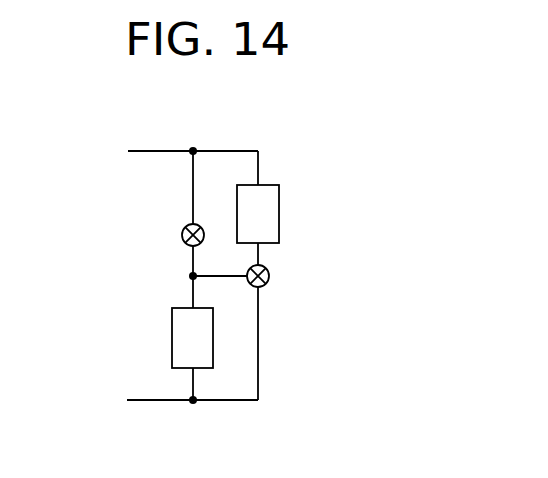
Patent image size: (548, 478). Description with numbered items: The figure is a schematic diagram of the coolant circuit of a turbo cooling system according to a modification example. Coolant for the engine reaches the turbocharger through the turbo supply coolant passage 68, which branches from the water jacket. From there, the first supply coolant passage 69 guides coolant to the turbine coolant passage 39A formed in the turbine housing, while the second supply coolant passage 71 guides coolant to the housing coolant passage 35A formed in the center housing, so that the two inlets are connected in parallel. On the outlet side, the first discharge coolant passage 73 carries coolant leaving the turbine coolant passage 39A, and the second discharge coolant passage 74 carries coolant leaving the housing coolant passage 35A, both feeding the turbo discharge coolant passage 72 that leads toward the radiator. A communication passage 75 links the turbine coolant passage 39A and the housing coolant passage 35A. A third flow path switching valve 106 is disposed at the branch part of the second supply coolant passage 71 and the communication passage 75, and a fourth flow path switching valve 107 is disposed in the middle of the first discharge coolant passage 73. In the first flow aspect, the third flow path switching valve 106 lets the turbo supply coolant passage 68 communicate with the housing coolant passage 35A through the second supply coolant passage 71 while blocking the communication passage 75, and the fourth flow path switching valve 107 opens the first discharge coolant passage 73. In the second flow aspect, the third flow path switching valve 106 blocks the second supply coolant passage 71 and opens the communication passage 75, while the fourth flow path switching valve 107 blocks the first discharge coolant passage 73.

The turbo discharge coolant passage 72 is at (178, 150).
The second discharge coolant passage 74 is at (258, 161).
The first discharge coolant passage 73 is at (193, 262).
The fourth flow path switching valve 107 is at (204, 228).
The housing coolant passage 35A is at (279, 240).
The third flow path switching valve 106 is at (269, 276).
The communication passage 75 is at (226, 279).
The second supply coolant passage 71 is at (258, 357).
The turbine coolant passage 39A is at (172, 357).
The first supply coolant passage 69 is at (191, 387).
The turbo supply coolant passage 68 is at (142, 402).